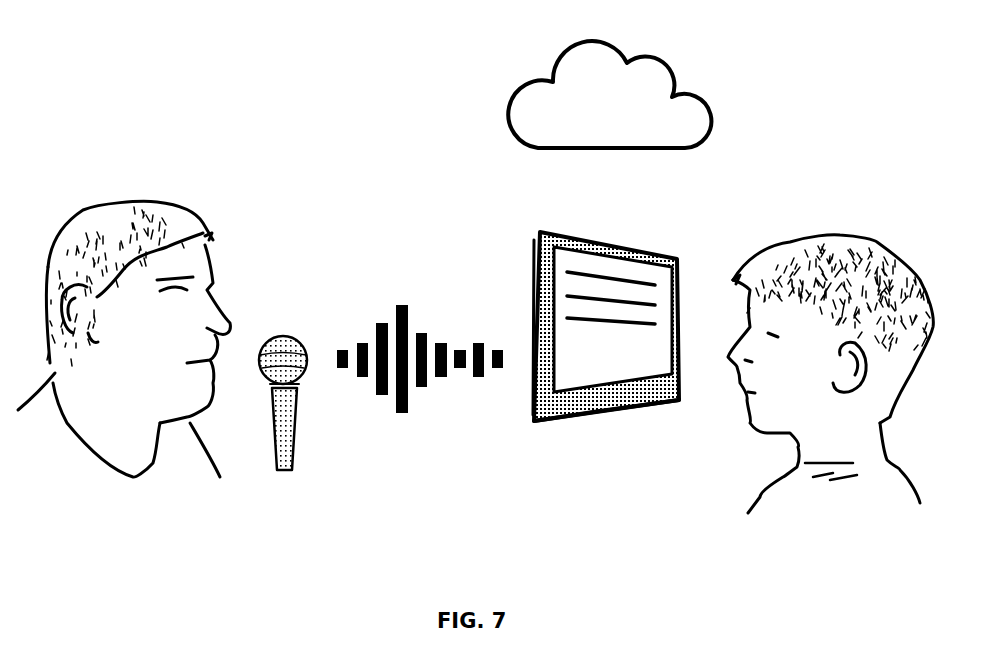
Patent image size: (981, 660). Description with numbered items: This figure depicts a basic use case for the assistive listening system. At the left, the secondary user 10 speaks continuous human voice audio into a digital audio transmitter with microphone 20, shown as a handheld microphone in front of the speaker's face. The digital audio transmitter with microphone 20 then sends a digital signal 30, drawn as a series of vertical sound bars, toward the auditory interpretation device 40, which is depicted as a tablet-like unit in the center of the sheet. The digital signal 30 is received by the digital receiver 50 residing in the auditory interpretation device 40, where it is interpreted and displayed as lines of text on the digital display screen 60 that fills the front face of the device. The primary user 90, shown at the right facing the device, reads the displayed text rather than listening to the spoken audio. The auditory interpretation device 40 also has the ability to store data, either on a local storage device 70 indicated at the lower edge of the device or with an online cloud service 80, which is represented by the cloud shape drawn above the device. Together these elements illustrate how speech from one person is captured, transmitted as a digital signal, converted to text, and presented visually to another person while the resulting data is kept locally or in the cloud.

The secondary user 10 is at (126, 182).
The digital audio transmitter with microphone 20 is at (290, 492).
The digital signal 30 is at (395, 286).
The auditory interpretation device 40 is at (536, 216).
The digital receiver 50 is at (565, 418).
The digital display screen 60 is at (579, 338).
The local storage device 70 is at (618, 408).
The online cloud service 80 is at (528, 68).
The primary user 90 is at (795, 223).